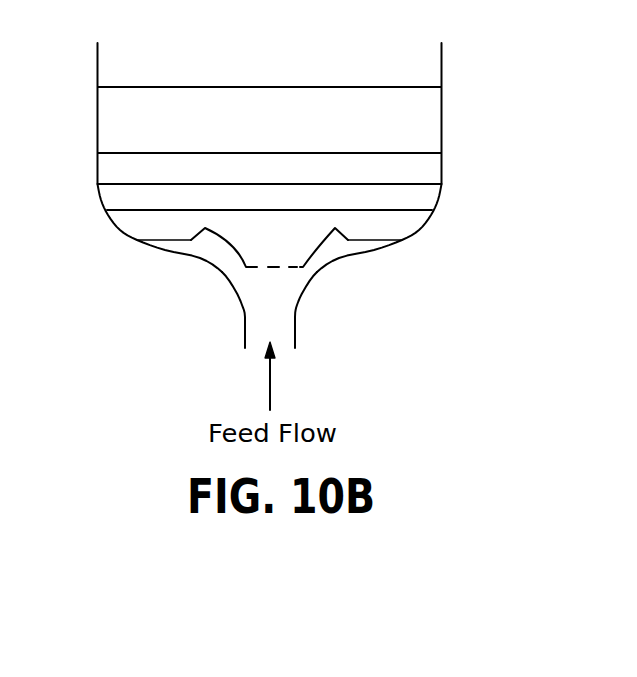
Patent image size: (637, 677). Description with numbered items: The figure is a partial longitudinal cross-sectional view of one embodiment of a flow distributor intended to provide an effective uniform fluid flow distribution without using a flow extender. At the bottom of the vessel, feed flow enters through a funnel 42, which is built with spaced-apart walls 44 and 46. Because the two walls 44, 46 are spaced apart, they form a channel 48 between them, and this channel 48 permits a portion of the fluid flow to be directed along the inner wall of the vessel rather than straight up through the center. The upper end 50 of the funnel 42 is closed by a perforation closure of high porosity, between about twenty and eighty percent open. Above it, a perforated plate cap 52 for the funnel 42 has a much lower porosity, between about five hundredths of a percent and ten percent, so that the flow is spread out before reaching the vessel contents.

The funnel 42 is at (316, 243).
The spaced-apart wall 44 is at (338, 230).
The spaced-apart wall 46 is at (310, 282).
The channel 48 is at (350, 250).
The upper end 50 is at (190, 252).
The perforated plate cap 52 is at (265, 260).